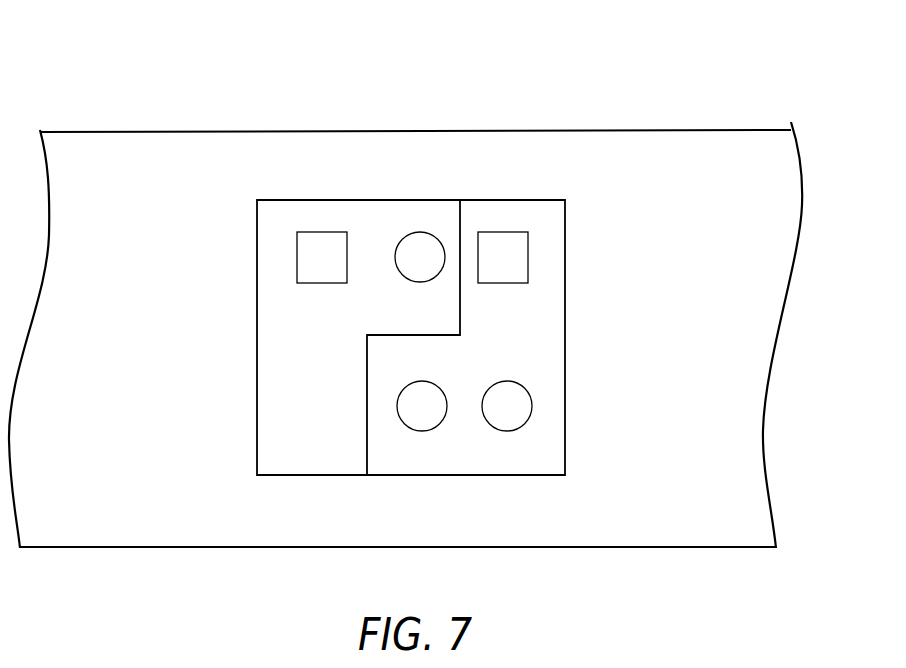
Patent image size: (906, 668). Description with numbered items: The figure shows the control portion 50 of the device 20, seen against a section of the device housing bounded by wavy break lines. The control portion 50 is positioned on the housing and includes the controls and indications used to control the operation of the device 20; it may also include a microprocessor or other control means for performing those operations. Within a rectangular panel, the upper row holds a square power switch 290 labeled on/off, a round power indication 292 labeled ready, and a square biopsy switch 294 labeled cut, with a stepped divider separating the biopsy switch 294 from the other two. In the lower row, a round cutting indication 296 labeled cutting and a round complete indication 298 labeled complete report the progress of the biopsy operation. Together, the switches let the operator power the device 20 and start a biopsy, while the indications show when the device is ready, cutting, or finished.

The device 20 is at (431, 88).
The control portion 50 is at (477, 185).
The power switch 290 is at (322, 250).
The power indication 292 is at (421, 248).
The biopsy switch 294 is at (503, 250).
The cutting indication 296 is at (422, 417).
The complete indication 298 is at (507, 417).